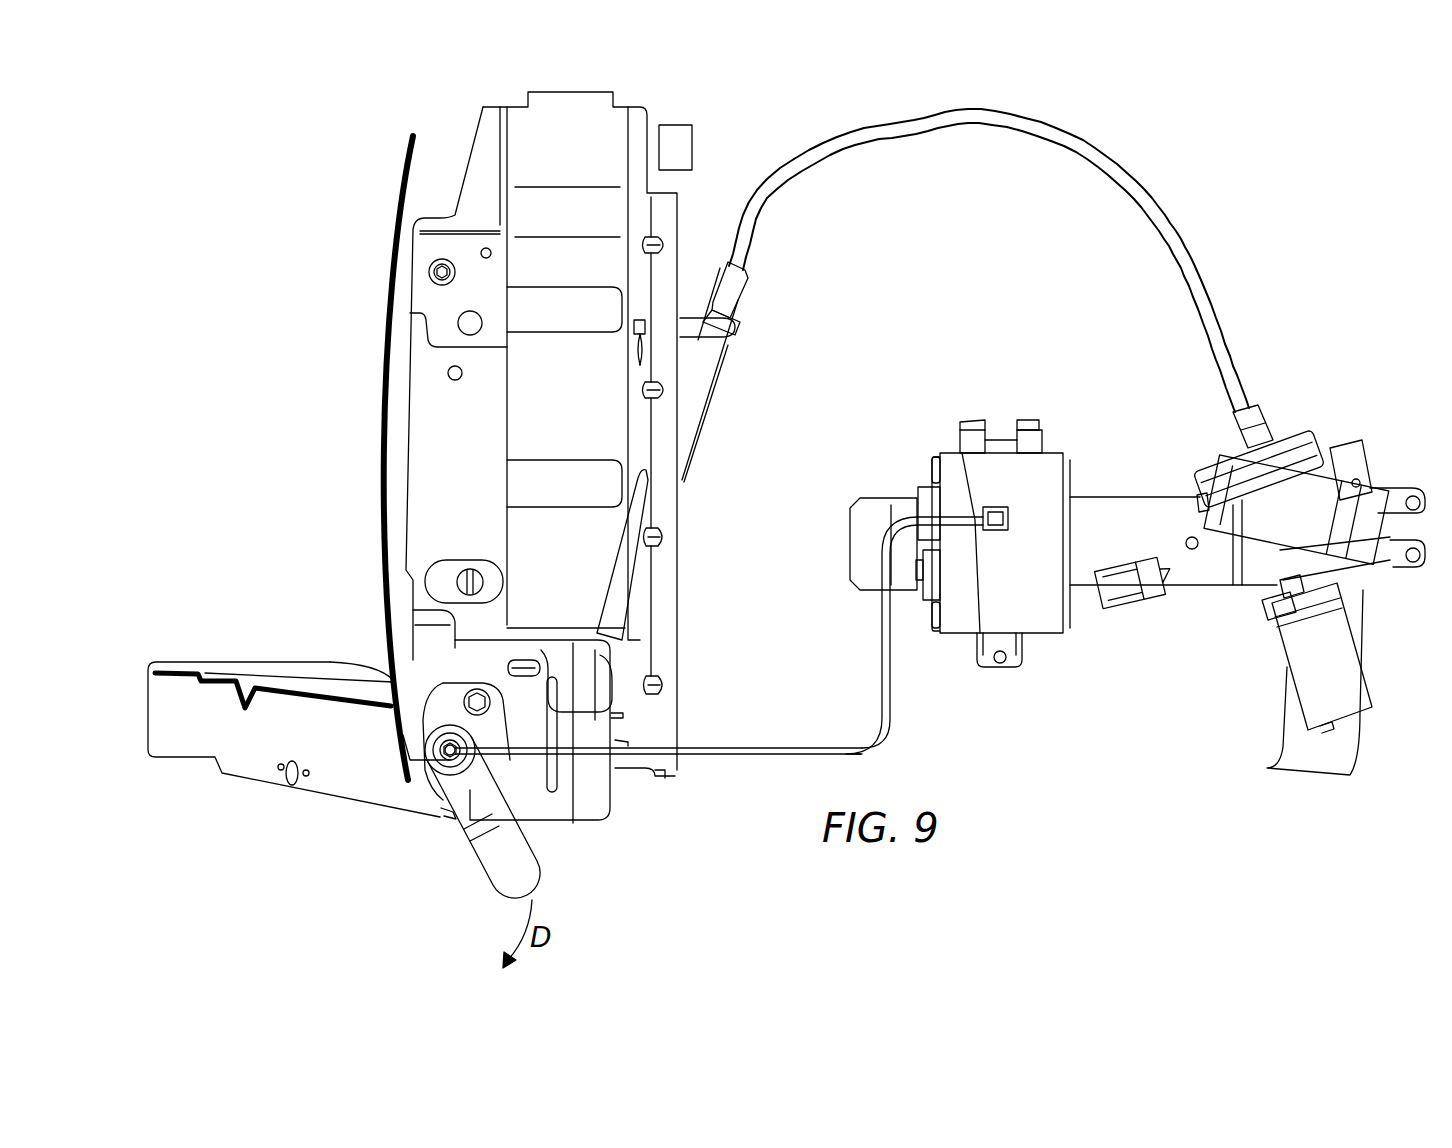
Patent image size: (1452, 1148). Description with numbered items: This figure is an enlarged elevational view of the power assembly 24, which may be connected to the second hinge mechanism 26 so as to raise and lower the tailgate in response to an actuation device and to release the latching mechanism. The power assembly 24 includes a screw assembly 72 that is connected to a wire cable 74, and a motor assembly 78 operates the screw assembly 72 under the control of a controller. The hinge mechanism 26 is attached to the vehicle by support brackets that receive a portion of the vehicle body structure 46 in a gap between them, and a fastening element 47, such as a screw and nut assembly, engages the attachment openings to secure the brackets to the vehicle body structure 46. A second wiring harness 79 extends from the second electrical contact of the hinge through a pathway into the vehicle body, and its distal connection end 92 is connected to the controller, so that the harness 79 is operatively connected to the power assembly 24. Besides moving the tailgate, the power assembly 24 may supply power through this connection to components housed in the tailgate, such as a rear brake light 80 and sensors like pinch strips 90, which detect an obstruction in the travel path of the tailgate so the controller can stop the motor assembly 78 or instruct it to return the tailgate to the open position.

The power assembly 24 is at (1157, 148).
The second hinge mechanism 26 is at (440, 876).
The vehicle body structure 46 is at (533, 700).
The fastening element 47 is at (490, 702).
The screw assembly 72 is at (728, 417).
The wire cable 74 is at (990, 128).
The motor assembly 78 is at (1345, 440).
The second wiring harness 79 is at (788, 745).
The rear brake light 80 is at (1050, 648).
The pinch strip 90 is at (384, 423).
The distal connection end 92 is at (997, 505).